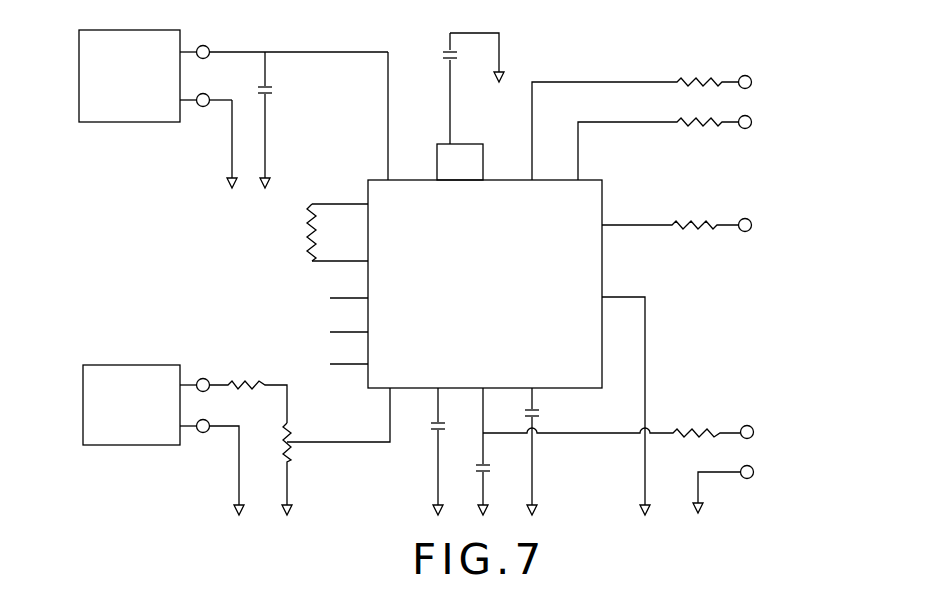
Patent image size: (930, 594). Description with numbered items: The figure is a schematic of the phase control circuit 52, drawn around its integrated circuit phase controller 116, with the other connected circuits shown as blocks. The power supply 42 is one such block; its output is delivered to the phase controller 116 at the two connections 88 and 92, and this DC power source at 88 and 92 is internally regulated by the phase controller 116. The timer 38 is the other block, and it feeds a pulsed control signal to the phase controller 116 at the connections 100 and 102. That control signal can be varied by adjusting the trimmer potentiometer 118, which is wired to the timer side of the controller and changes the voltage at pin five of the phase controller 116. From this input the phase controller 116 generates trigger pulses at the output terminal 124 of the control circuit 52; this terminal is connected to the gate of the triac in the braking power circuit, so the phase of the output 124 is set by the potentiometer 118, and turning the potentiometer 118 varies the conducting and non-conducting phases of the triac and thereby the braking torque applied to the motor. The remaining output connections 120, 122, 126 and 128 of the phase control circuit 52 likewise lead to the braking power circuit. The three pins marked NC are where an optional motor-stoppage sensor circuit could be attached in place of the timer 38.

The power supply 42 is at (137, 30).
The power supply output terminal 88 is at (210, 47).
The power supply output terminal 92 is at (206, 95).
The phase control circuit 52 is at (434, 31).
The integrated circuit phase controller 116 is at (472, 365).
The output connection 120 is at (660, 126).
The output connection 122 is at (683, 146).
The output terminal 124 is at (695, 225).
The output connection 126 is at (754, 432).
The output connection 128 is at (752, 477).
The timer 38 is at (146, 365).
The timer output connection 100 is at (209, 380).
The timer output connection 102 is at (210, 426).
The trimmer potentiometer 118 is at (292, 440).